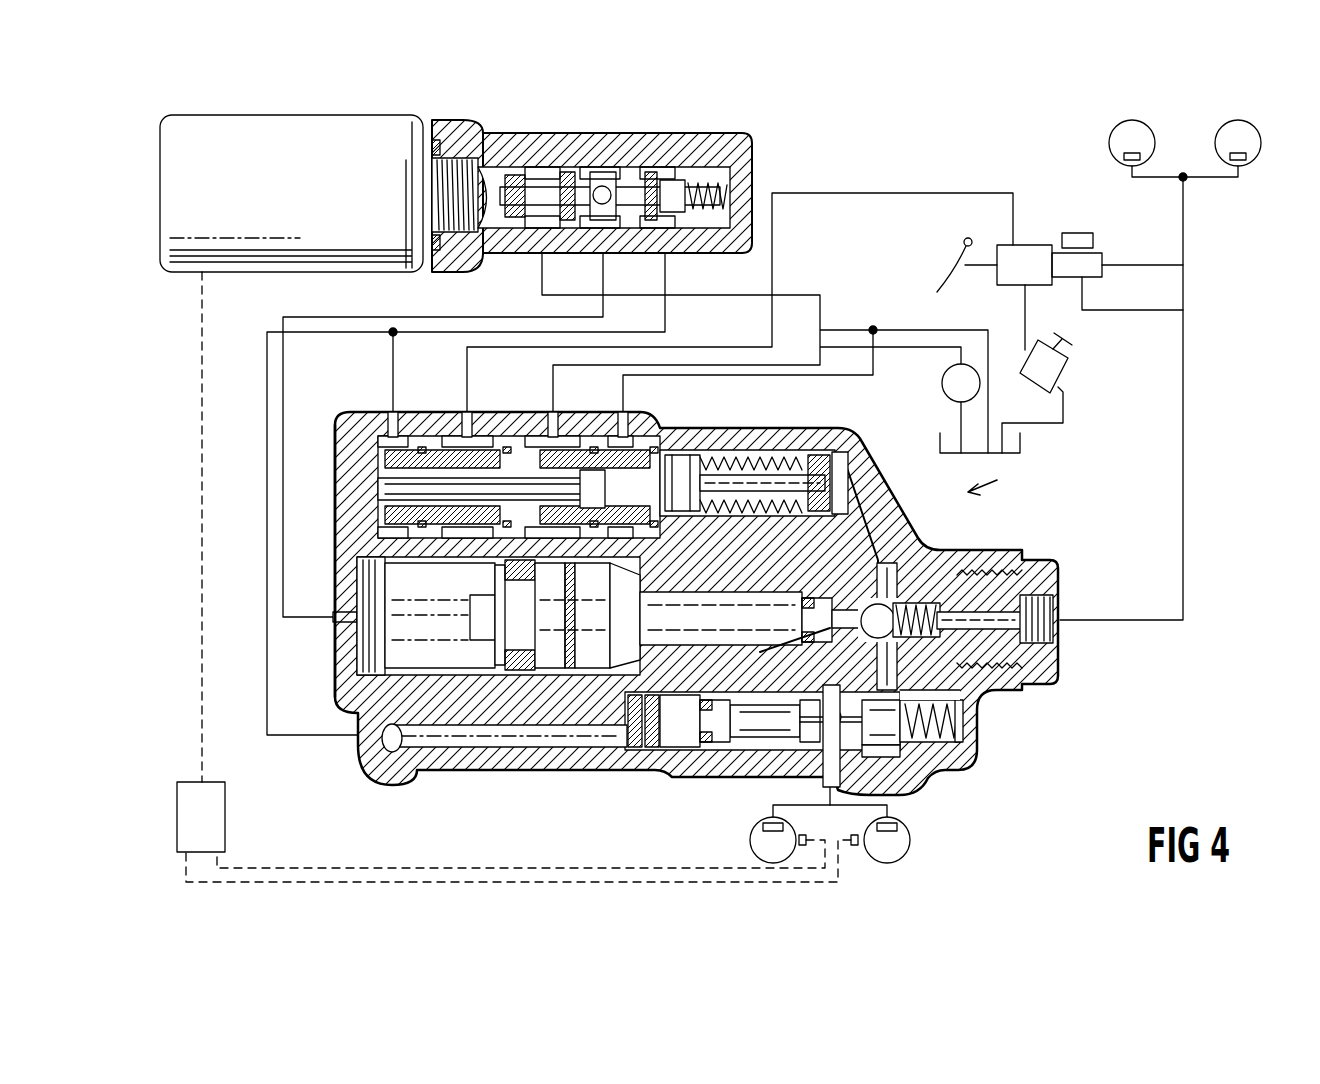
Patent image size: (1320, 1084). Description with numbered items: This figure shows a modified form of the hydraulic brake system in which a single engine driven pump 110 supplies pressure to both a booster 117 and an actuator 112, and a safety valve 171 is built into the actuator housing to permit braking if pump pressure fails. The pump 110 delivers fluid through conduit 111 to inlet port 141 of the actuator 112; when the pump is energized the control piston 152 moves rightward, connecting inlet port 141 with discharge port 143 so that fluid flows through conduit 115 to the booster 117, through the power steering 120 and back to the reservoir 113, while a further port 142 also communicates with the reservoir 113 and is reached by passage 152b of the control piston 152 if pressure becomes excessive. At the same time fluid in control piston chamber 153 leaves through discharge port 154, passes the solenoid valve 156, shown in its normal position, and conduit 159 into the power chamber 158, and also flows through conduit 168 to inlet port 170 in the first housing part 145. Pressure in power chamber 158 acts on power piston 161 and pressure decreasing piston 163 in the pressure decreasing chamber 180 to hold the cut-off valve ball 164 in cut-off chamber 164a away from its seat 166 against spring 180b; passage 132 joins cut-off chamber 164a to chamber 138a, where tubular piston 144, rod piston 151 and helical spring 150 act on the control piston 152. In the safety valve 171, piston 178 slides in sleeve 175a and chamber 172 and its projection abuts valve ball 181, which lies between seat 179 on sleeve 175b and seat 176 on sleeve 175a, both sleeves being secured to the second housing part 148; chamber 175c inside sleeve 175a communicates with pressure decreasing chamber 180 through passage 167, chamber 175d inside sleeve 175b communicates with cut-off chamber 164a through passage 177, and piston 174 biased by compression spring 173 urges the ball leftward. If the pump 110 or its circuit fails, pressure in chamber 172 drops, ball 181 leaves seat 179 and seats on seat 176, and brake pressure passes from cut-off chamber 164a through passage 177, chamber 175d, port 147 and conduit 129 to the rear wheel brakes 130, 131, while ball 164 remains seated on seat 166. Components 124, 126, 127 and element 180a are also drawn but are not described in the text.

The engine driven pump 110 is at (942, 380).
The conduit 111 is at (736, 365).
The actuator 112 is at (993, 475).
The reservoir 113 is at (1012, 442).
The conduit 115 is at (910, 193).
The booster 117 is at (1025, 245).
The power steering 120 is at (1069, 368).
The control unit 124 is at (1104, 260).
The brake 126 is at (1112, 136).
The brake 127 is at (1260, 137).
The conduit 129 is at (834, 800).
The rear wheel brake 130 is at (765, 864).
The rear wheel brake 131 is at (895, 864).
The passage 132 is at (856, 512).
The chamber 138a is at (844, 450).
The inlet port 141 is at (557, 418).
The port 142 is at (628, 418).
The discharge port 143 is at (468, 418).
The tubular piston 144 is at (795, 458).
The first housing part 145 is at (344, 416).
The port 147 is at (805, 760).
The second housing part 148 is at (858, 455).
The helical spring 150 is at (722, 468).
The rod piston 151 is at (757, 480).
The control piston 152 is at (408, 505).
The passage 152b is at (592, 440).
The control piston chamber 153 is at (380, 488).
The discharge port 154 is at (397, 418).
The solenoid valve 156 is at (578, 148).
The power chamber 158 is at (438, 628).
The conduit 159 is at (358, 317).
The power piston 161 is at (510, 622).
The pressure decreasing piston 163 is at (700, 606).
The cut-off valve ball 164 is at (882, 602).
The cut-off chamber 164a is at (905, 608).
The valve seat 166 is at (874, 652).
The passage 167 is at (800, 652).
The conduit 168 is at (267, 676).
The inlet port 170 is at (385, 746).
The safety valve 171 is at (507, 772).
The chamber 172 is at (628, 750).
The compression spring 173 is at (965, 762).
The piston 174 is at (960, 728).
The sleeve 175a is at (735, 745).
The sleeve 175b is at (905, 776).
The chamber 175c is at (778, 756).
The chamber 175d is at (880, 784).
The valve seat 176 is at (822, 746).
The passage 177 is at (975, 698).
The piston 178 is at (672, 750).
The valve seat 179 is at (832, 794).
The pressure decreasing chamber 180 is at (870, 578).
The spring seat 180a is at (822, 620).
The spring 180b is at (950, 600).
The valve ball 181 is at (796, 635).